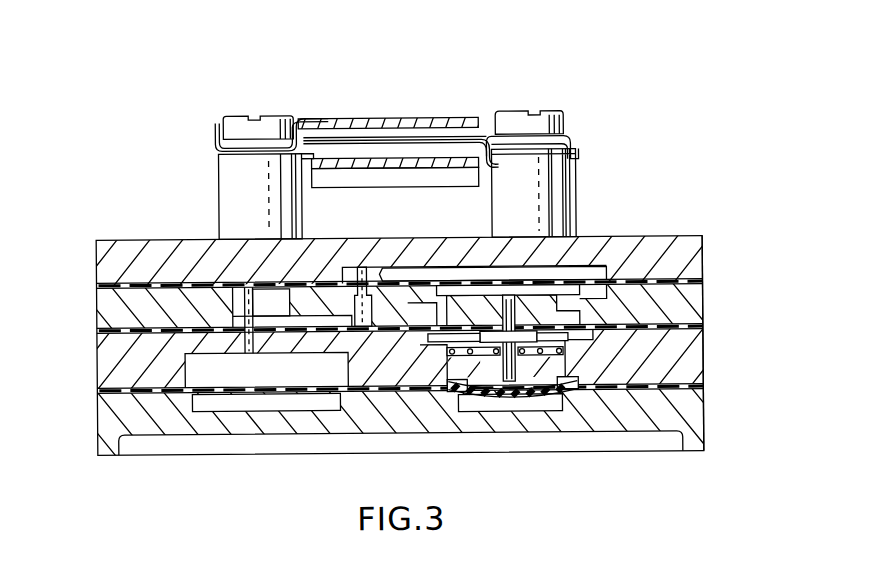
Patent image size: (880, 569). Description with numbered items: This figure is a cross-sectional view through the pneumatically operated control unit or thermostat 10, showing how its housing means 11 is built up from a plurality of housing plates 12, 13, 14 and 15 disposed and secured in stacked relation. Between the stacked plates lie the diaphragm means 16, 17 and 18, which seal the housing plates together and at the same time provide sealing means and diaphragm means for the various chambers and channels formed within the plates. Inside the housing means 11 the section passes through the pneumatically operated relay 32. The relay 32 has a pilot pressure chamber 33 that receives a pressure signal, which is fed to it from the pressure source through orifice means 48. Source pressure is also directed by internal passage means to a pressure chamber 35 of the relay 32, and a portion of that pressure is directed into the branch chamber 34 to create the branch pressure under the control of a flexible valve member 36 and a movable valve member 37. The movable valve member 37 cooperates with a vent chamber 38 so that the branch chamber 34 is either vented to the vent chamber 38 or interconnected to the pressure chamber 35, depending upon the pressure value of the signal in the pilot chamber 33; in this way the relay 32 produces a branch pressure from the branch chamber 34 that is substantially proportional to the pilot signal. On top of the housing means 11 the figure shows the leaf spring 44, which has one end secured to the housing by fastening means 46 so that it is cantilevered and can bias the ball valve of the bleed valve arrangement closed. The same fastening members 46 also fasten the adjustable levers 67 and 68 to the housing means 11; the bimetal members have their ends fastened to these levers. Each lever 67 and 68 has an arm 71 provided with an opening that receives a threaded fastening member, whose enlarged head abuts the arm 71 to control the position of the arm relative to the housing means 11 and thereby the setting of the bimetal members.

The control unit 10 is at (722, 208).
The housing means 11 is at (704, 252).
The housing plate 12 is at (105, 420).
The housing plate 13 is at (110, 360).
The housing plate 14 is at (108, 306).
The housing plate 15 is at (100, 246).
The diaphragm means 16 is at (112, 393).
The diaphragm means 17 is at (113, 337).
The diaphragm means 18 is at (108, 285).
The pneumatic relay 32 is at (598, 264).
The pilot pressure chamber 33 is at (535, 273).
The branch chamber 34 is at (555, 338).
The pressure chamber 35 is at (490, 405).
The flexible valve member 36 is at (523, 398).
The movable valve member 37 is at (458, 364).
The vent chamber 38 is at (597, 292).
The leaf spring 44 is at (385, 188).
The fastening means 46 is at (247, 127).
The orifice means 48 is at (384, 268).
The adjustable lever 67 is at (403, 118).
The adjustable lever 68 is at (428, 158).
The arm 71 is at (262, 148).